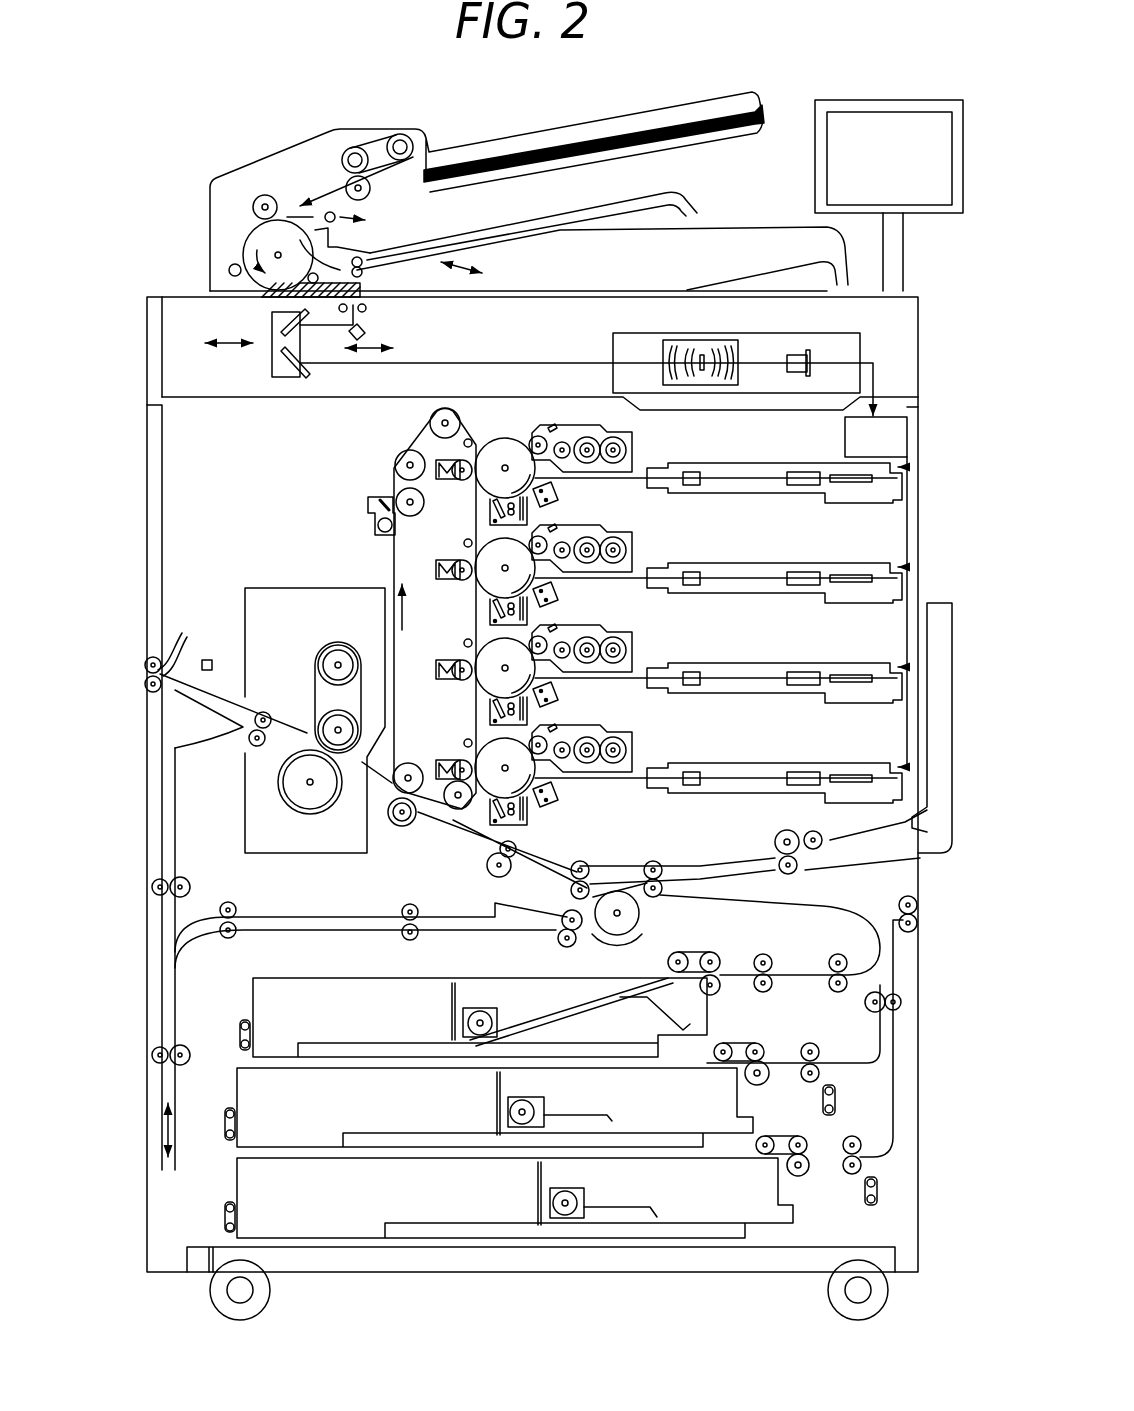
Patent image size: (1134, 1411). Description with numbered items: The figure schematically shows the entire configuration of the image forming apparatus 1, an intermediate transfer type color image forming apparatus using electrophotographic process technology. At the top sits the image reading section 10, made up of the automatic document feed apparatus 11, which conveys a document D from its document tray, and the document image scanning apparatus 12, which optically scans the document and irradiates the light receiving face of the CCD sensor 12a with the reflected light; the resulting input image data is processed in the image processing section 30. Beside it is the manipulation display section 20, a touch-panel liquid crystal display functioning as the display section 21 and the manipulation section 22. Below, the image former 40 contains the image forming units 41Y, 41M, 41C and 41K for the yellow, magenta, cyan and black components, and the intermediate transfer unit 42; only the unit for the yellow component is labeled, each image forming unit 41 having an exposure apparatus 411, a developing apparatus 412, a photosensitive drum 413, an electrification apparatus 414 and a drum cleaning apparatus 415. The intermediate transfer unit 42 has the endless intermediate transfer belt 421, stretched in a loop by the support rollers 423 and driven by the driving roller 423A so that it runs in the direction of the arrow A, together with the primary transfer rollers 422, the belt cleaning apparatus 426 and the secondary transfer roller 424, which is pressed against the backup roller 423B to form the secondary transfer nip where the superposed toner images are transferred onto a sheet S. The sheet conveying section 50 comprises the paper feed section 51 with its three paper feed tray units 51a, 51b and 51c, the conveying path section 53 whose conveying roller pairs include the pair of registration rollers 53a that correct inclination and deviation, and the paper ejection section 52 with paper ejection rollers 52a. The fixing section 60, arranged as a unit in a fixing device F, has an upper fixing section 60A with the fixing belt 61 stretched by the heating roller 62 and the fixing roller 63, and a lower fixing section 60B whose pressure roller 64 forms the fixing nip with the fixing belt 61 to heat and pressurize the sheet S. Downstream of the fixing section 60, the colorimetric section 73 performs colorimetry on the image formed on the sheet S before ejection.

The image forming apparatus 1 is at (509, 89).
The image reading section 10 is at (472, 235).
The automatic document feed apparatus 11 is at (480, 172).
The document image scanning apparatus 12 is at (496, 324).
The charge coupled device (CCD) sensor 12a is at (812, 357).
The manipulation display section 20 is at (889, 165).
The display section 21 is at (889, 165).
The manipulation section 22 is at (891, 72).
The image processing section 30 is at (920, 408).
The image former 40 is at (287, 504).
The image forming unit 41 is at (655, 614).
The image forming unit for Y component 41Y is at (655, 475).
The image forming unit for M component 41M is at (668, 611).
The image forming unit for C component 41C is at (668, 708).
The image forming unit for K component 41K is at (668, 806).
The exposure apparatus 411 is at (740, 464).
The developing apparatus 412 is at (640, 442).
The photosensitive drum 413 is at (498, 442).
The electrification apparatus 414 is at (560, 495).
The drum cleaning apparatus 415 is at (489, 522).
The intermediate transfer unit 42 is at (379, 660).
The intermediate transfer belt 421 is at (392, 568).
The primary transfer roller 422 is at (458, 481).
The support roller 423 is at (430, 425).
The driving roller 423A is at (460, 812).
The backup roller 423B is at (412, 797).
The secondary transfer roller 424 is at (398, 826).
The belt cleaning apparatus 426 is at (369, 503).
The sheet conveying section 50 is at (565, 902).
The paper feed section 51 is at (523, 1083).
The paper feed tray unit 51a is at (451, 1000).
The paper feed tray unit 51b is at (238, 1100).
The paper feed tray unit 51c is at (237, 1185).
The paper ejection section 52 is at (178, 629).
The paper ejection rollers 52a is at (160, 666).
The conveying path section 53 is at (710, 890).
The pair of registration rollers 53a is at (540, 842).
The fixing section 60 is at (297, 708).
The upper fixing section 60A is at (280, 653).
The lower fixing section 60B is at (272, 821).
The fixing belt 61 is at (315, 680).
The heating roller 62 is at (336, 652).
The fixing roller 63 is at (320, 725).
The pressure roller 64 is at (290, 781).
The colorimetric section 73 is at (210, 660).
The belt running direction arrow A is at (416, 607).
The document D is at (618, 118).
The fixing device F is at (305, 639).
The sheet S is at (597, 1003).